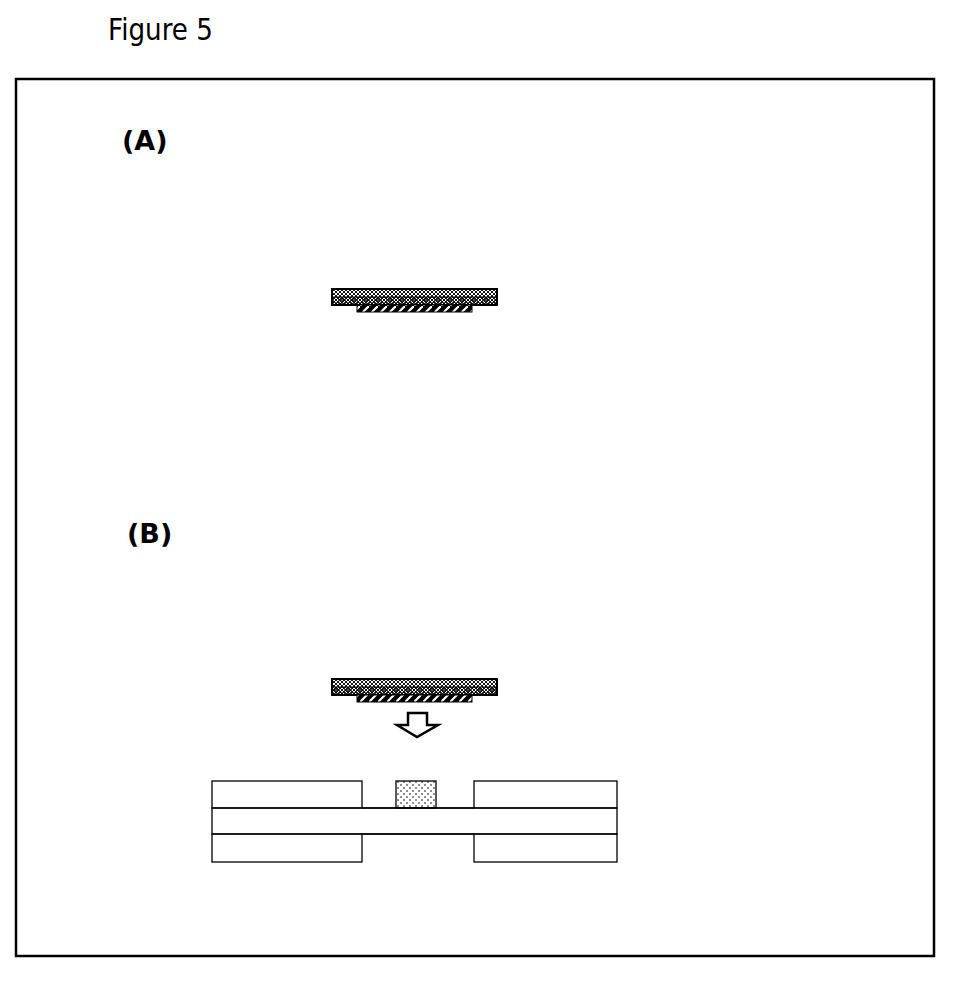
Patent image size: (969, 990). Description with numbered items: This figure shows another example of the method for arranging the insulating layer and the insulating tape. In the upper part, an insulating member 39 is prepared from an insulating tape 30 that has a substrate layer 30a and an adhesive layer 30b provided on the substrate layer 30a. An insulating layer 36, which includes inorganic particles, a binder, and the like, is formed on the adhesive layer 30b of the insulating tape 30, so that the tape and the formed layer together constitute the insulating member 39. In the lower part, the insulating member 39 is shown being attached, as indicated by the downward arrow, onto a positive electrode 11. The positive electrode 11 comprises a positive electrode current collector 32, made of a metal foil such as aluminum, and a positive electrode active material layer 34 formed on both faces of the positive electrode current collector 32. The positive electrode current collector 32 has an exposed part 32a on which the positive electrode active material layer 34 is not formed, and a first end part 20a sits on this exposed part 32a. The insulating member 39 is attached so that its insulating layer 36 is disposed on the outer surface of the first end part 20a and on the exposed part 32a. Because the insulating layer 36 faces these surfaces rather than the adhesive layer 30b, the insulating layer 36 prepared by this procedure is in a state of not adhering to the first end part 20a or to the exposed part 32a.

The insulating member 39 is at (417, 438).
The insulating tape 30 is at (488, 288).
The substrate layer 30a is at (332, 293).
The adhesive layer 30b is at (497, 300).
The insulating layer 36 is at (357, 310).
The first end part 20a is at (425, 781).
The positive electrode 11 is at (496, 806).
The positive electrode current collector 32 is at (618, 821).
The exposed part 32a is at (372, 836).
The positive electrode active material layer 34 is at (618, 795).